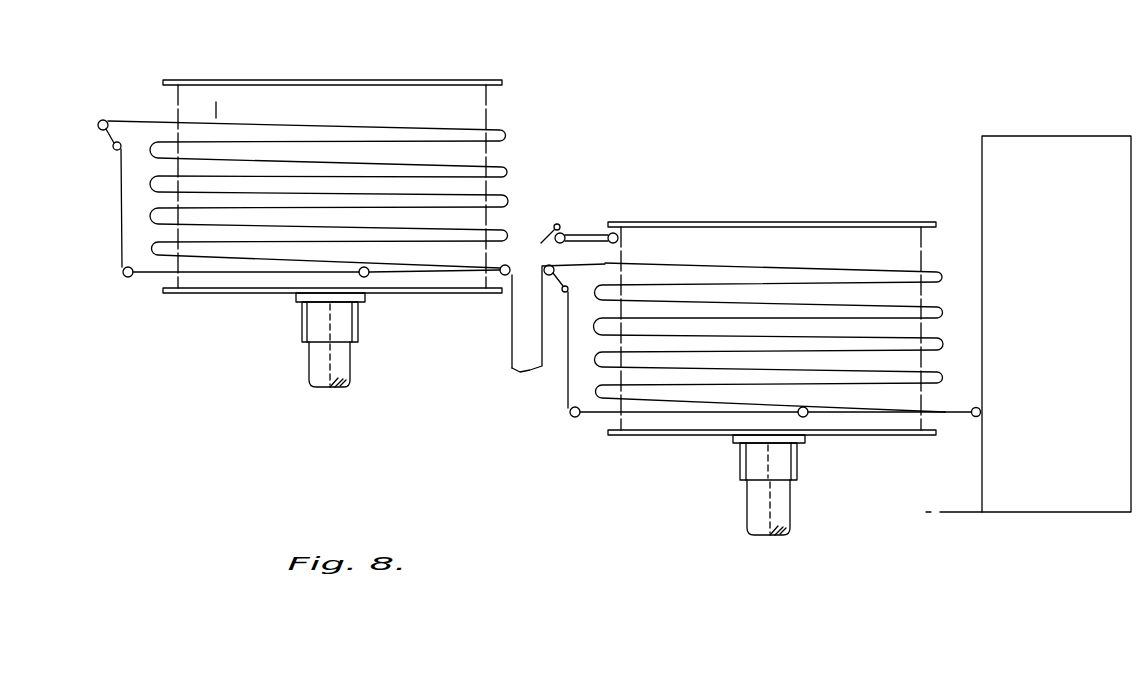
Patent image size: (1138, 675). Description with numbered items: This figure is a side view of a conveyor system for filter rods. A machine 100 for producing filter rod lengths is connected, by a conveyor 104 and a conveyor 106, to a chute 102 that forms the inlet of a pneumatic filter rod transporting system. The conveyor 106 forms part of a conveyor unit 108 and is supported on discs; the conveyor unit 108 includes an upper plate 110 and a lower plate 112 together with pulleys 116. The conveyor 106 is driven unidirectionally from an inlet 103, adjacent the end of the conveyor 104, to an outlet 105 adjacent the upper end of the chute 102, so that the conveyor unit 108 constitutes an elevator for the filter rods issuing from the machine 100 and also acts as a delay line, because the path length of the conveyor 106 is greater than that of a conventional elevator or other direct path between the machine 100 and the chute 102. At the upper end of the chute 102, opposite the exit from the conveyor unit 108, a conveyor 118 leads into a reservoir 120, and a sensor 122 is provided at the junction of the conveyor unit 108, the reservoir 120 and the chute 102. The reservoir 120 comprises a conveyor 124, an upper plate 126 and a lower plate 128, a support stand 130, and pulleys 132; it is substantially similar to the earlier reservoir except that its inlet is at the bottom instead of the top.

The machine 100 is at (1078, 341).
The chute 102 is at (514, 355).
The inlet 103 is at (948, 383).
The conveyor 104 is at (950, 415).
The outlet 105 is at (608, 252).
The conveyor 106 is at (905, 265).
The conveyor unit 108 is at (868, 224).
The upper plate 110 is at (770, 221).
The lower plate 112 is at (660, 437).
The pulleys 116 is at (568, 290).
The conveyor 118 is at (464, 273).
The reservoir 120 is at (510, 75).
The sensor 122 is at (518, 235).
The conveyor 124 is at (513, 129).
The upper plate 126 is at (322, 79).
The lower plate 128 is at (228, 294).
The support stand 130 is at (318, 389).
The pulleys 132 is at (100, 130).